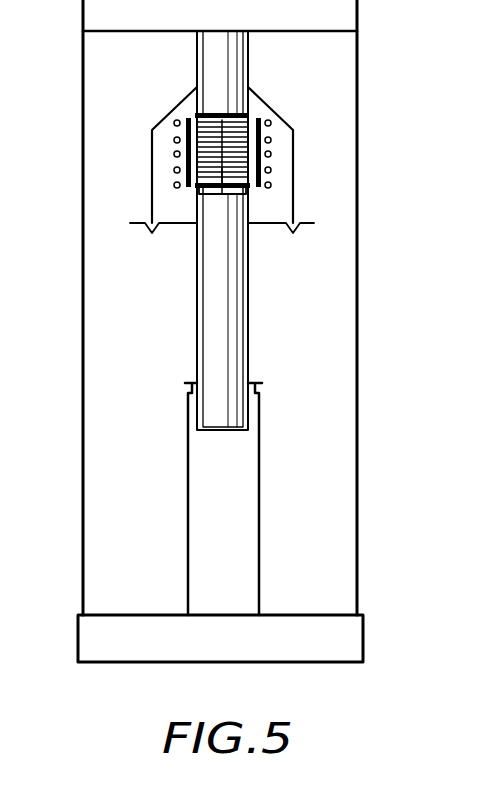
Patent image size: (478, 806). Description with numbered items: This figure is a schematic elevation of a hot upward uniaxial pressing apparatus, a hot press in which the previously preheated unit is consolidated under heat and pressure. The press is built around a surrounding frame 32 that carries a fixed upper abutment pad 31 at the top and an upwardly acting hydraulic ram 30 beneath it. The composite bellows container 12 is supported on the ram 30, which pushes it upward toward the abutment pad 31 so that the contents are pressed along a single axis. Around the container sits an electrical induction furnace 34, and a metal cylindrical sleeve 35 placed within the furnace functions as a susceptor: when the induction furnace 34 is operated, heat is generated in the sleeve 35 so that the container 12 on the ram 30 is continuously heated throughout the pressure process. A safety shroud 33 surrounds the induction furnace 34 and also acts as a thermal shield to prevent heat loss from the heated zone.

The composite bellows container 12 is at (222, 194).
The hydraulic ram 30 is at (243, 332).
The fixed upper abutment pad 31 is at (242, 58).
The surrounding frame 32 is at (355, 10).
The safety shroud 33 is at (295, 175).
The electrical induction furnace 34 is at (271, 140).
The metal cylindrical sleeve 35 is at (257, 190).